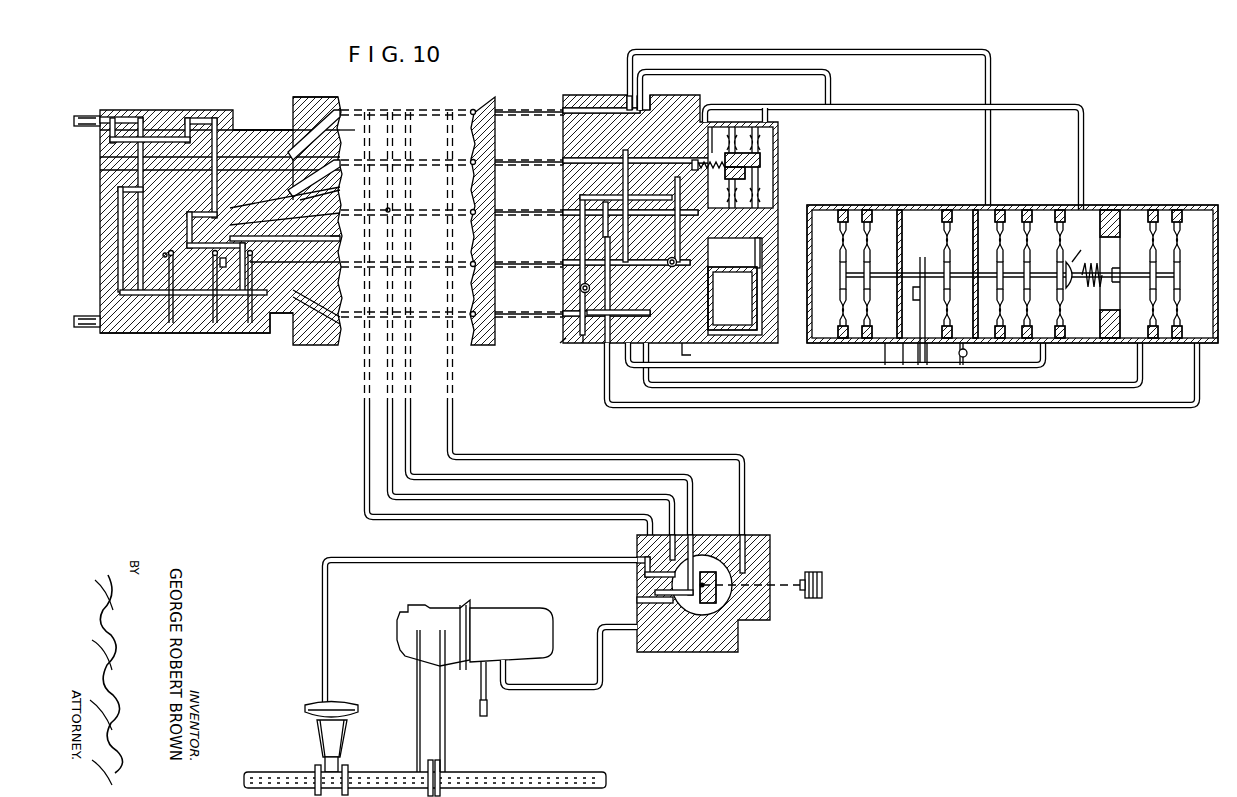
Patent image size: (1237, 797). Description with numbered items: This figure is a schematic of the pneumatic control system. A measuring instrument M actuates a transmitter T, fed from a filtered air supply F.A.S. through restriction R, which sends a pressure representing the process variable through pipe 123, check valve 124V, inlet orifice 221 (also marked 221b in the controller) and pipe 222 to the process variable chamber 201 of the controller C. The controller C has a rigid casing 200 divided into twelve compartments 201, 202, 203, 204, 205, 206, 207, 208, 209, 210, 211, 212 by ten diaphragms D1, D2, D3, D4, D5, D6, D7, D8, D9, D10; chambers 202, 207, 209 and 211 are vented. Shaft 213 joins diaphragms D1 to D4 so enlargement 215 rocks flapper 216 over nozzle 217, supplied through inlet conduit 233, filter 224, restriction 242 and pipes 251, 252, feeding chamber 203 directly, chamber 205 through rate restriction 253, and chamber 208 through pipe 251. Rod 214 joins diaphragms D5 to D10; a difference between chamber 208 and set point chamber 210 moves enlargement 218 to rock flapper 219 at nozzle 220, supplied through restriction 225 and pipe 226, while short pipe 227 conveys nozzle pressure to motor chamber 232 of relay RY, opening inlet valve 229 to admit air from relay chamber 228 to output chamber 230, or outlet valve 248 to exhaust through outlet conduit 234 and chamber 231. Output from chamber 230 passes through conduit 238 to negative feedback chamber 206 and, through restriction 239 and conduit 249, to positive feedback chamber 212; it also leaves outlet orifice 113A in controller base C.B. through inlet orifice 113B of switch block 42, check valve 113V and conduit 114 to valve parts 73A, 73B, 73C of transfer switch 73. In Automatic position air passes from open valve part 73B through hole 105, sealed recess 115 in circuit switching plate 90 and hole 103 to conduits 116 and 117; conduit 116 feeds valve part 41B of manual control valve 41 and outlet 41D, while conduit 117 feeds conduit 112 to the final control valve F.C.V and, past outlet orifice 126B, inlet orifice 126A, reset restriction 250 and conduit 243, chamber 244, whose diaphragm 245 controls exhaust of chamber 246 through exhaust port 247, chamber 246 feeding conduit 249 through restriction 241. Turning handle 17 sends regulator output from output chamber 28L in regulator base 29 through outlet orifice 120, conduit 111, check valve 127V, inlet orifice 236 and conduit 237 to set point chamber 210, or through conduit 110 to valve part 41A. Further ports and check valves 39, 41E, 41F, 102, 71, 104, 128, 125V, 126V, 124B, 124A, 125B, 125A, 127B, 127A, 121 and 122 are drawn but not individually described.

The inlet fitting 39 is at (90, 115).
The manual control valve 41 is at (236, 104).
The valve part 41A is at (126, 116).
The valve part 41B is at (200, 116).
The outlet port 41D is at (100, 147).
The passage 41E is at (100, 158).
The passage 41F is at (100, 171).
The conduit 110 is at (141, 133).
The conduit 116 is at (217, 145).
The hole 103 is at (140, 184).
The sealed recess 115 is at (230, 217).
The passage 102 is at (160, 233).
The circuit switching plate 90 is at (160, 256).
The outlet fitting 71 is at (86, 328).
The transfer switch 73 is at (132, 342).
The valve part 73A is at (170, 325).
The valve part 73B is at (214, 325).
The valve part 73C is at (251, 325).
The hole 105 is at (222, 268).
The conduit 114 is at (345, 158).
The passage 104 is at (340, 190).
The passage 128 is at (388, 209).
The conduit 117 is at (340, 238).
The conduit 112 is at (374, 262).
The conduit 111 is at (460, 532).
The switch block 42 is at (468, 100).
The check valve 124V is at (470, 113).
The check valve 113V is at (470, 162).
The conduit 125V is at (470, 213).
The conduit 126V is at (470, 263).
The check valve 127V is at (470, 313).
The conduit 124B is at (498, 112).
The conduit 124A is at (563, 112).
The inlet orifice 113B is at (498, 162).
The outlet orifice 113A is at (563, 163).
The conduit 125B is at (498, 212).
The conduit 125A is at (563, 214).
The outlet orifice 126B is at (498, 264).
The inlet orifice 126A is at (563, 266).
The conduit 127B is at (498, 314).
The conduit 127A is at (563, 316).
The controller base C.B. is at (598, 93).
The conduit 238 is at (585, 195).
The inlet conduit 233 is at (648, 221).
The restriction 242 is at (624, 258).
The filter 224 is at (675, 207).
The reset restriction 250 is at (672, 258).
The inlet orifice 236 is at (647, 311).
The inlet orifice 221 is at (640, 92).
The restriction 225 is at (656, 120).
The inlet conduit 222 is at (830, 80).
The nozzle 220 is at (1084, 110).
The short pipe 227 is at (770, 118).
The relay RY is at (781, 165).
The pipe 226 is at (738, 107).
The output chamber 230 is at (722, 127).
The chamber 231 is at (756, 127).
The motor chamber 232 is at (766, 168).
The relay chamber 228 is at (690, 164).
The inlet valve 229 is at (694, 160).
The outlet valve 248 is at (722, 190).
The outlet conduit 234 is at (744, 205).
The reset chamber 244 is at (748, 296).
The conduit 243 is at (722, 268).
The chamber 246 is at (707, 311).
The diaphragm 245 is at (710, 289).
The exhaust port 247 is at (701, 353).
The restriction 239 is at (566, 343).
The restriction 241 is at (587, 343).
The conduit 249 is at (918, 408).
The conduit 237 is at (870, 386).
The pipe 251 is at (773, 365).
The controller C is at (1130, 192).
The enlargement 215 is at (922, 257).
The flapper 219 is at (1090, 290).
The diaphragm D1 is at (841, 248).
The diaphragm D2 is at (878, 243).
The diaphragm D3 is at (899, 248).
The diaphragm D4 is at (945, 250).
The diaphragm D5 is at (992, 274).
The diaphragm D6 is at (1019, 274).
The diaphragm D7 is at (1057, 248).
The diaphragm D8 is at (1118, 250).
The diaphragm D9 is at (1161, 274).
The diaphragm D10 is at (1192, 274).
The enlargement 218 is at (1075, 289).
The nozzle 221b is at (1116, 292).
The shaft 213 is at (883, 279).
The rod 214 is at (1043, 279).
The nozzle 217 is at (901, 354).
The flapper 216 is at (943, 354).
The pipe 252 is at (884, 354).
The rate restriction 253 is at (968, 354).
The rigid casing 200 is at (1217, 345).
The process variable chamber 201 is at (832, 205).
The sealing chamber 202 is at (864, 205).
The chamber 203 is at (884, 205).
The compartment 204 is at (930, 205).
The chamber 205 is at (967, 205).
The negative feedback chamber 206 is at (999, 205).
The chamber 207 is at (1018, 205).
The chamber 208 is at (1038, 205).
The chamber 209 is at (1068, 205).
The set point chamber 210 is at (1130, 205).
The chamber 211 is at (1163, 205).
The positive feedback chamber 212 is at (1196, 205).
The regulator base 29 is at (783, 531).
The output chamber 28L is at (712, 566).
The outlet orifice 120 is at (645, 533).
The port 121 is at (671, 533).
The port 122 is at (691, 533).
The pipe 123 is at (745, 533).
The handle 17 is at (823, 585).
The filtered air supply F.A.S. is at (633, 600).
The final control valve F.C.V is at (328, 732).
The measuring instrument M is at (414, 617).
The transmitter T is at (518, 622).
The restriction R is at (479, 694).